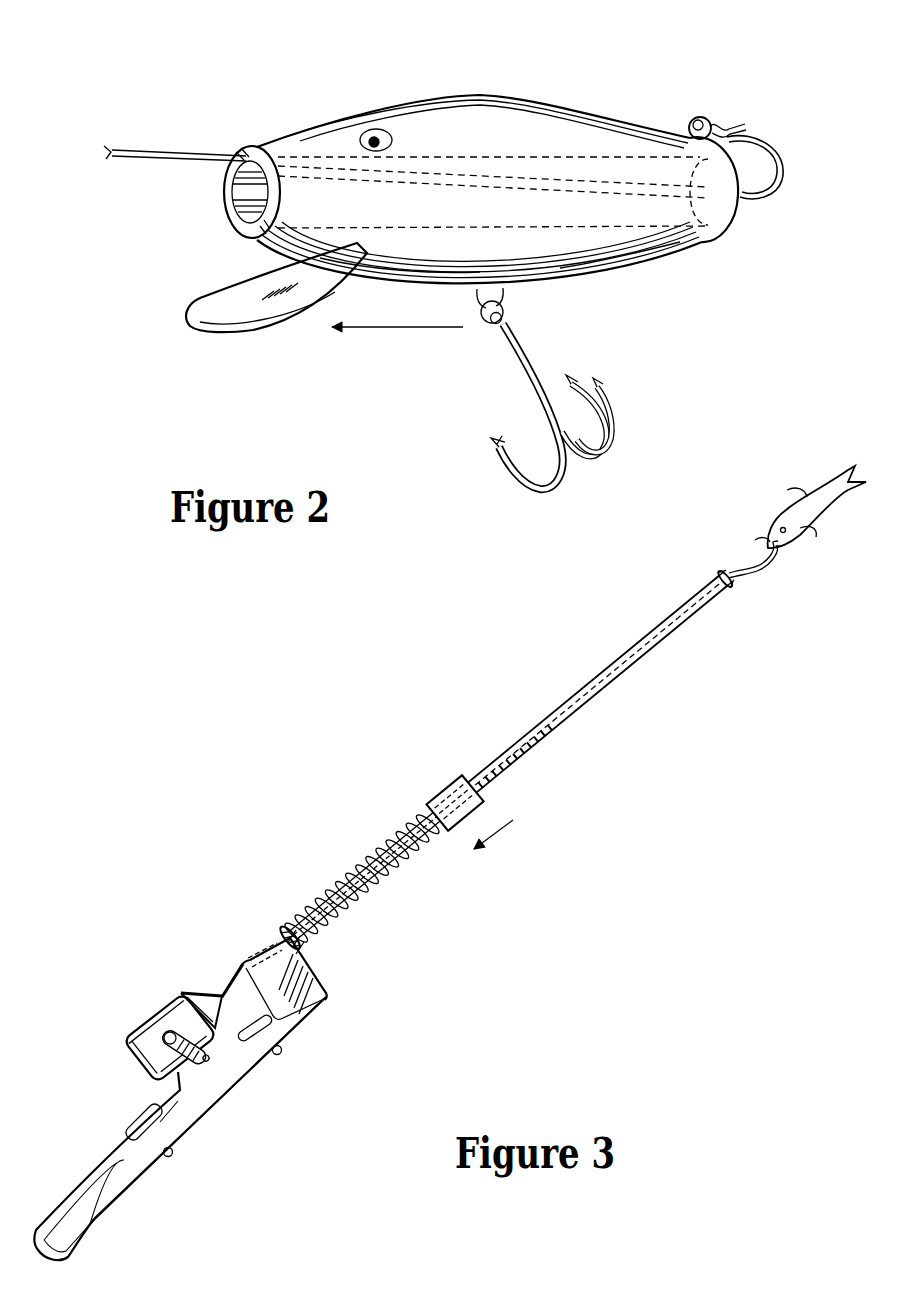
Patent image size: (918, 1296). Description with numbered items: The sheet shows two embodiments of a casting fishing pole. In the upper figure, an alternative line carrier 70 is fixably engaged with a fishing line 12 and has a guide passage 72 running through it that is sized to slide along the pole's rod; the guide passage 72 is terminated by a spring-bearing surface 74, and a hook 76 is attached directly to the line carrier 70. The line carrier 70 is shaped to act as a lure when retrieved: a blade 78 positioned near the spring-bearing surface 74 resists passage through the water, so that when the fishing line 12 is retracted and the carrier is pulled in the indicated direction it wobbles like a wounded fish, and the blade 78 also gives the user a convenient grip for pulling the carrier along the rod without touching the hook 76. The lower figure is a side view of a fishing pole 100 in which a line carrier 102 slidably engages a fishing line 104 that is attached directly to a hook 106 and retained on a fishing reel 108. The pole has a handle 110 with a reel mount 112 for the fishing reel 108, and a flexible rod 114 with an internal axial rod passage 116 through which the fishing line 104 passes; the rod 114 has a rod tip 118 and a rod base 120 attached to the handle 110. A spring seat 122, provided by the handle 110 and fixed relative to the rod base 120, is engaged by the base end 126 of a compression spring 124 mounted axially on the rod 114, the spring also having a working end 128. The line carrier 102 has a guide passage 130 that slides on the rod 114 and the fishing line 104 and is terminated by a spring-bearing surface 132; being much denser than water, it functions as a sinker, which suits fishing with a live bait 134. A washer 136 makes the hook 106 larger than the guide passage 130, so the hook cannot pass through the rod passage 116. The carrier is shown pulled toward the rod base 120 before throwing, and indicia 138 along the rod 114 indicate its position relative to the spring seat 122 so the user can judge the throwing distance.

In FIG. 2, the fishing line 12 is at (240, 153).
In FIG. 2, the line carrier 70 is at (547, 86).
In FIG. 2, the guide passage 72 is at (447, 155).
In FIG. 2, the spring-bearing surface 74 is at (243, 233).
In FIG. 2, the hook 76 is at (528, 371).
In FIG. 2, the blade 78 is at (247, 327).
In FIG. 3, the fishing pole 100 is at (240, 752).
In FIG. 3, the line carrier 102 is at (446, 783).
In FIG. 3, the fishing line 104 is at (236, 983).
In FIG. 3, the hook 106 is at (752, 568).
In FIG. 3, the fishing reel 108 is at (142, 1040).
In FIG. 3, the handle 110 is at (152, 1173).
In FIG. 3, the reel mount 112 is at (215, 1090).
In FIG. 3, the flexible rod 114 is at (545, 720).
In FIG. 3, the rod passage 116 is at (600, 677).
In FIG. 3, the rod tip 118 is at (731, 592).
In FIG. 3, the rod base 120 is at (286, 937).
In FIG. 3, the spring seat 122 is at (300, 942).
In FIG. 3, the compression spring 124 is at (366, 906).
In FIG. 3, the base end 126 is at (287, 928).
In FIG. 3, the working end 128 is at (428, 812).
In FIG. 3, the guide passage 130 is at (470, 806).
In FIG. 3, the spring-bearing surface 132 is at (440, 828).
In FIG. 3, the live bait 134 is at (782, 494).
In FIG. 3, the washer 136 is at (725, 572).
In FIG. 3, the indicia 138 is at (538, 751).